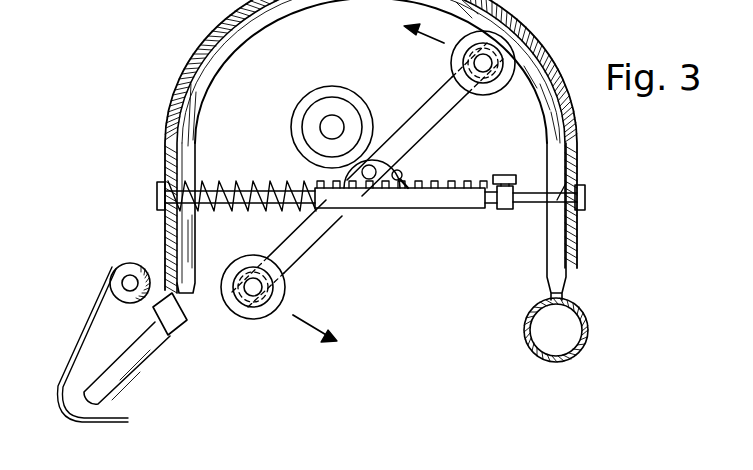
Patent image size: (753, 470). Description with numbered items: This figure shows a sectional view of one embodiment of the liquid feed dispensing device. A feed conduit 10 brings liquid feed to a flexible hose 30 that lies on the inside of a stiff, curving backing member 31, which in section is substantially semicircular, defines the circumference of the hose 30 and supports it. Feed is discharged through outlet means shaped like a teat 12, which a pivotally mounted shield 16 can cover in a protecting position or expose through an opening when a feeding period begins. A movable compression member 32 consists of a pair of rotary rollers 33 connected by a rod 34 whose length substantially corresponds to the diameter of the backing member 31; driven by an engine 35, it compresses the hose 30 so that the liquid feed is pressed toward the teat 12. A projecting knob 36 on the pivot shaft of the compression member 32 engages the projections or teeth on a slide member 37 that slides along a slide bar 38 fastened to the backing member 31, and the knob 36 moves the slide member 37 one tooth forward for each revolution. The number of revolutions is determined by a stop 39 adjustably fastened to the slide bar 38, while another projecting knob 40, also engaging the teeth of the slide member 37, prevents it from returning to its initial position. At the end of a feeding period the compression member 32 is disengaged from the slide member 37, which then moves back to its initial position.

The feed conduit 10 is at (568, 338).
The teat 12 is at (132, 363).
The shield 16 is at (96, 312).
The flexible hose 30 is at (206, 80).
The backing member 31 is at (578, 236).
The compression member 32 is at (295, 254).
The rotary rollers 33 is at (244, 311).
The rod 34 is at (433, 101).
The engine 35 is at (313, 101).
The projecting knob 36 is at (357, 194).
The slide member 37 is at (413, 199).
The slide bar 38 is at (568, 185).
The stop 39 is at (504, 209).
The projecting knob 40 is at (407, 176).